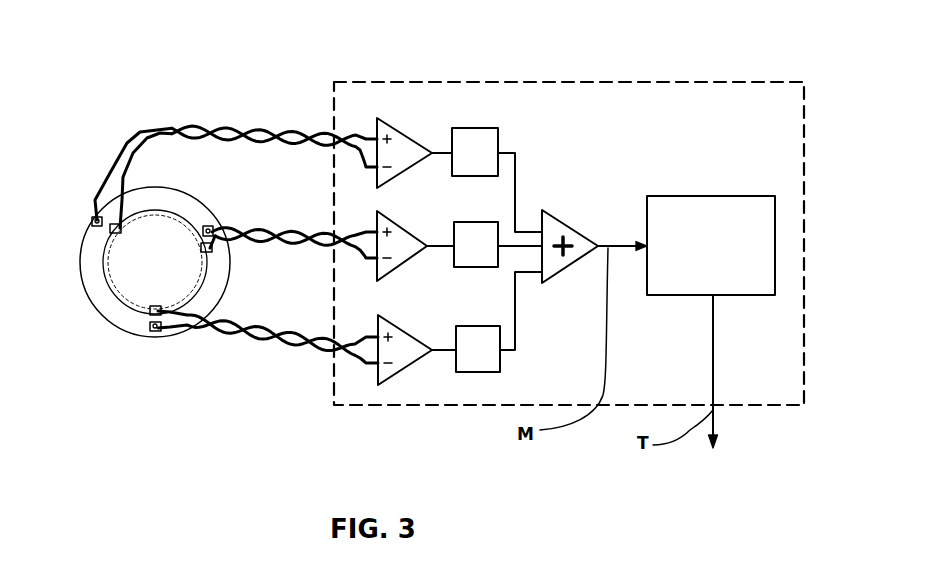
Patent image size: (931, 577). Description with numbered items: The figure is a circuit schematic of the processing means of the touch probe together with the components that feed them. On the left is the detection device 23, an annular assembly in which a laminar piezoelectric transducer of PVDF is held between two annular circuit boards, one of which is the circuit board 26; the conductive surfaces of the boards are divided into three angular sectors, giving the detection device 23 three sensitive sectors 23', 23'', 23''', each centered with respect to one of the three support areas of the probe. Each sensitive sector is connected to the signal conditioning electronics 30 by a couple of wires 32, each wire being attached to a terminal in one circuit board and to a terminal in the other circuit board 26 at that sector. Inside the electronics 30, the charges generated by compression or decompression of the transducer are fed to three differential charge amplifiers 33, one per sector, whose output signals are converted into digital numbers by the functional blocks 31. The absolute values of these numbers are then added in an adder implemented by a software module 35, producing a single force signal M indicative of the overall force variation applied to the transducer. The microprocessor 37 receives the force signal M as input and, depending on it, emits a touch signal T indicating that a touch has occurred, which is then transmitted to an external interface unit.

The detection device 23 is at (137, 262).
The sensitive sector 23' is at (80, 189).
The sensitive sector 23'' is at (233, 215).
The sensitive sector 23''' is at (160, 360).
The annular circuit board 26 is at (120, 318).
The signal conditioning electronics 30 is at (731, 136).
The functional blocks 31 is at (472, 153).
The couples of wires 32 is at (293, 232).
The differential charge amplifiers 33 is at (403, 348).
The software module 35 is at (568, 226).
The microprocessor 37 is at (669, 220).